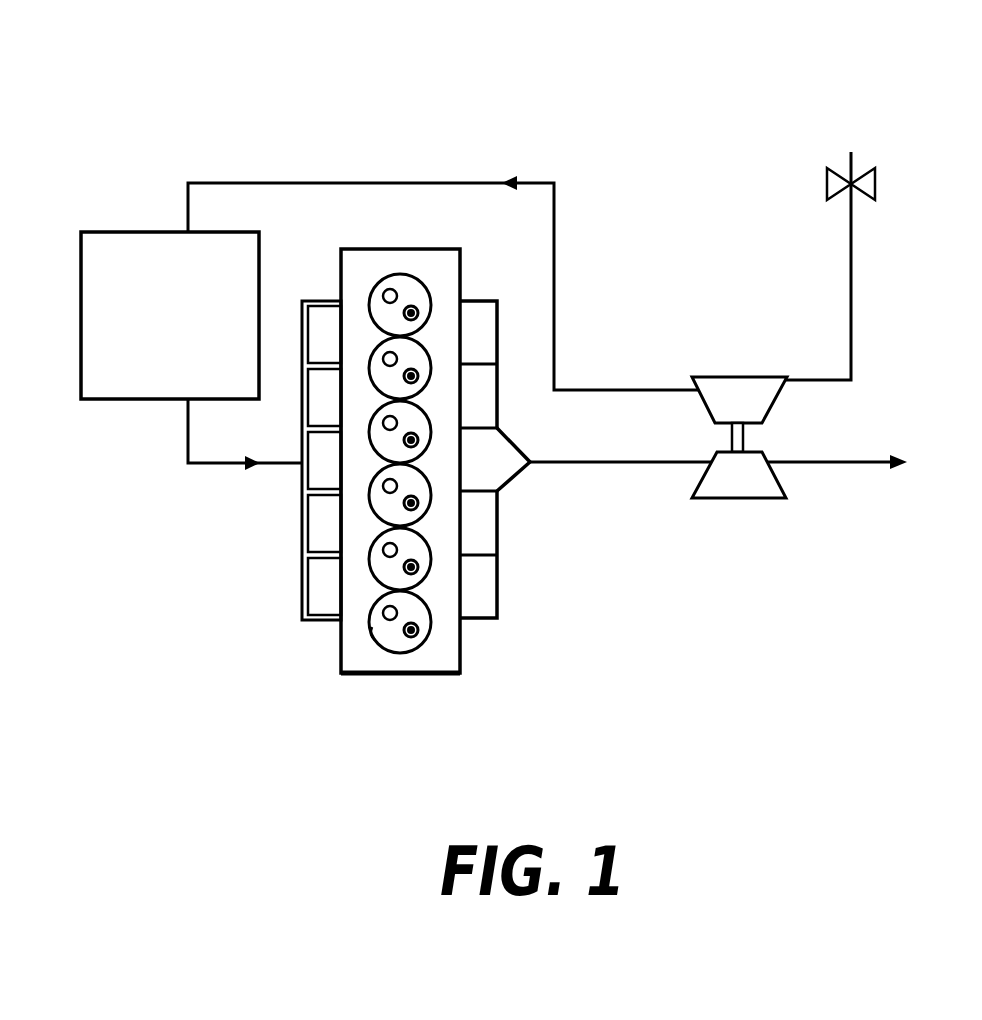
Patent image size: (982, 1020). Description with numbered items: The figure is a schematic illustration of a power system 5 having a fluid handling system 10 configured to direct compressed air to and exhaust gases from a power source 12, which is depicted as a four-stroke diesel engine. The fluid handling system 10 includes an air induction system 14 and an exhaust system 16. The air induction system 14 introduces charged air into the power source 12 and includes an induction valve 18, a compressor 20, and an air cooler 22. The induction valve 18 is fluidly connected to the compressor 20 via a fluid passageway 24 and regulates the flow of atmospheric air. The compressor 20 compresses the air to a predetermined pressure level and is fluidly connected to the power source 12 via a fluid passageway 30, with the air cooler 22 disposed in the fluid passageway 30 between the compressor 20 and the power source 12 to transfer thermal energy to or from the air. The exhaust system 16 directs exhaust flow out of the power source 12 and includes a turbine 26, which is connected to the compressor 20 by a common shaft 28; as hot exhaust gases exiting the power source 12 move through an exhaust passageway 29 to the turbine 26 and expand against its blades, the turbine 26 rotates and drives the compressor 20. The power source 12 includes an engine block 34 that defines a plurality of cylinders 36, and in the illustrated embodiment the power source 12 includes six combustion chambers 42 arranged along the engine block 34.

The power system 5 is at (324, 112).
The fluid handling system 10 is at (856, 548).
The power source 12 is at (482, 636).
The air induction system 14 is at (228, 486).
The exhaust system 16 is at (528, 520).
The induction valve 18 is at (826, 184).
The compressor 20 is at (740, 377).
The air cooler 22 is at (150, 366).
The fluid passageway 24 is at (851, 273).
The turbine 26 is at (740, 499).
The common shaft 28 is at (730, 428).
The exhaust passageway 29 is at (591, 462).
The fluid passageway 30 is at (554, 244).
The engine block 34 is at (427, 673).
The cylinder 36 is at (376, 634).
The combustion chamber 42 is at (420, 615).